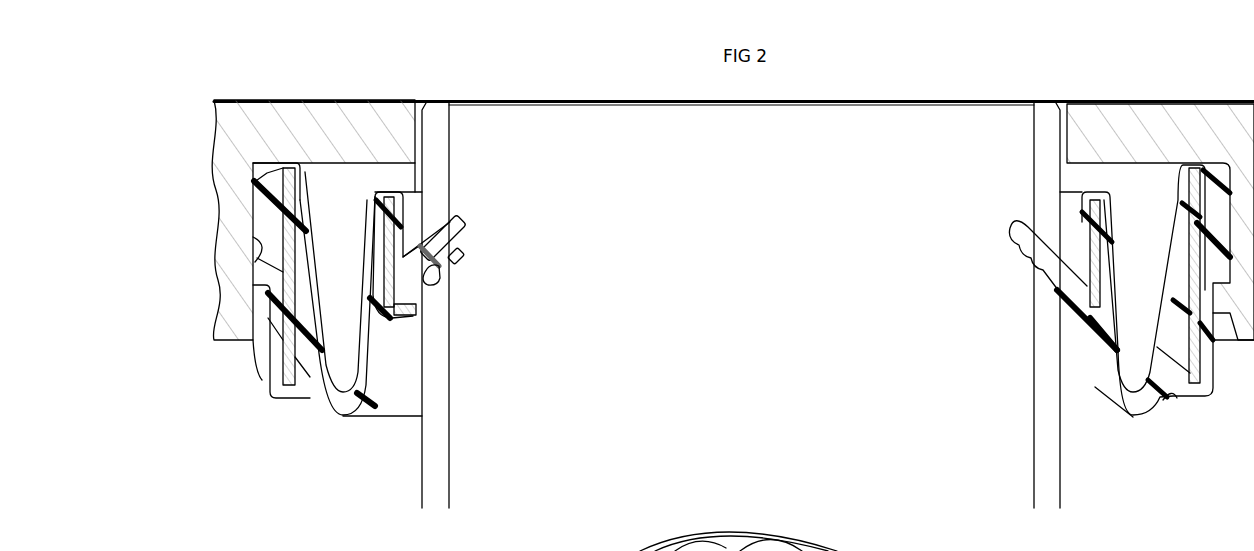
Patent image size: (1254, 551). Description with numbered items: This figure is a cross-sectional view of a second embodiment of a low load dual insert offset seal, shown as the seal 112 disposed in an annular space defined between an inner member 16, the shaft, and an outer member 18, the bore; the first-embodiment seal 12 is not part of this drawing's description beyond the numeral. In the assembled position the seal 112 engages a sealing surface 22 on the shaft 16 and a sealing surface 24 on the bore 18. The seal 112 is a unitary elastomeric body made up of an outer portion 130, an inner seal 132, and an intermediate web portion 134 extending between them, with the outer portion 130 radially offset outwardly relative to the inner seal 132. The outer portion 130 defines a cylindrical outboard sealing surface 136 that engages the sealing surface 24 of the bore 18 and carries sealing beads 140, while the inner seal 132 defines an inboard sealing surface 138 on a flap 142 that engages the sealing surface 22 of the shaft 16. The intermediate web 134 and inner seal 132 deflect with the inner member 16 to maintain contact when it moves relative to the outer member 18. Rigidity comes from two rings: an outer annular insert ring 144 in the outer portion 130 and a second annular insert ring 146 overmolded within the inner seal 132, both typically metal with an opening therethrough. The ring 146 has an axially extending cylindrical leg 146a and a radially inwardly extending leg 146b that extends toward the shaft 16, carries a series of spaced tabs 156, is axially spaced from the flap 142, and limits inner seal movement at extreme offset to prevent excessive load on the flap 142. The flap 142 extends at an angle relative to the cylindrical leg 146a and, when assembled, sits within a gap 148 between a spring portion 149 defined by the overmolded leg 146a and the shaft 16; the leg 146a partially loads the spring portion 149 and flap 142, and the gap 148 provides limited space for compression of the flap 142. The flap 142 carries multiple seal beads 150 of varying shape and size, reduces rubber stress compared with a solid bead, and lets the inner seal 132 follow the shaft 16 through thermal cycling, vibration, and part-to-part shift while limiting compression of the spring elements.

The first seal assembly 12 is at (355, 316).
The inner member 16 is at (990, 113).
The outer member 18 is at (255, 105).
The sealing surface 22 is at (422, 186).
The sealing surface 24 is at (253, 270).
The seal 112 is at (1099, 346).
The outer portion 130 is at (282, 396).
The inner seal 132 is at (480, 207).
The intermediate web portion 134 is at (348, 416).
The outboard sealing surface 136 is at (248, 231).
The inboard sealing surface 138 is at (462, 268).
The sealing beads 140 is at (253, 212).
The flap 142 is at (480, 228).
The outer annular insert ring 144 is at (292, 300).
The second annular insert ring 146 is at (370, 243).
The axially extending cylindrical leg 146a is at (385, 207).
The radially inwardly extending leg 146b is at (408, 312).
The gap 148 is at (412, 230).
The spring portion 149 is at (1082, 222).
The seal beads 150 is at (452, 248).
The spaced tabs 156 is at (640, 550).